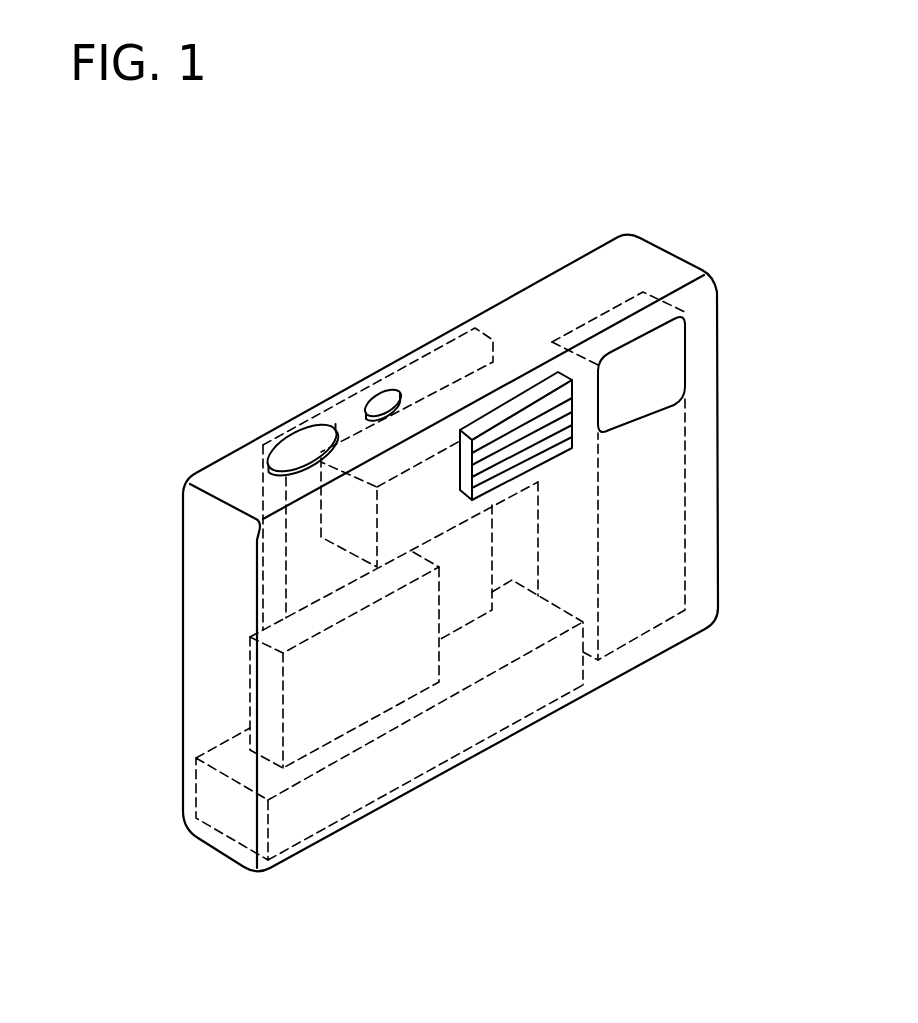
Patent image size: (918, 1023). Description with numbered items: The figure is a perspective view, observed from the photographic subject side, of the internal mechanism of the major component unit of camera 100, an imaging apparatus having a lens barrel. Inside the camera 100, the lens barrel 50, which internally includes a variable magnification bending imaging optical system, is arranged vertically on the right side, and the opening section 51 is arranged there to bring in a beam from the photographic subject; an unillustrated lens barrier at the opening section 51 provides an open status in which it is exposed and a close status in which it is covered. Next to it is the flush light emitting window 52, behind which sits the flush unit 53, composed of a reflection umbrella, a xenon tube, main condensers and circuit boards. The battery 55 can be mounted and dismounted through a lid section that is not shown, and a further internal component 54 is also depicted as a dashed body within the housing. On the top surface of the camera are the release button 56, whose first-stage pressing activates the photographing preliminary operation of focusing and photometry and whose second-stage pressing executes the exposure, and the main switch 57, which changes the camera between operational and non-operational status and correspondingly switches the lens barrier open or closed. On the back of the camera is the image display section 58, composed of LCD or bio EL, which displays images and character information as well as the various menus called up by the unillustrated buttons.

The camera 100 is at (512, 214).
The lens barrel 50 is at (672, 474).
The opening section 51 is at (665, 364).
The flush light emitting window 52 is at (529, 412).
The flush unit 53 is at (510, 362).
The battery 54 is at (355, 705).
The battery 55 is at (440, 742).
The release button 56 is at (299, 450).
The main switch 57 is at (383, 400).
The image display section 58 is at (428, 360).